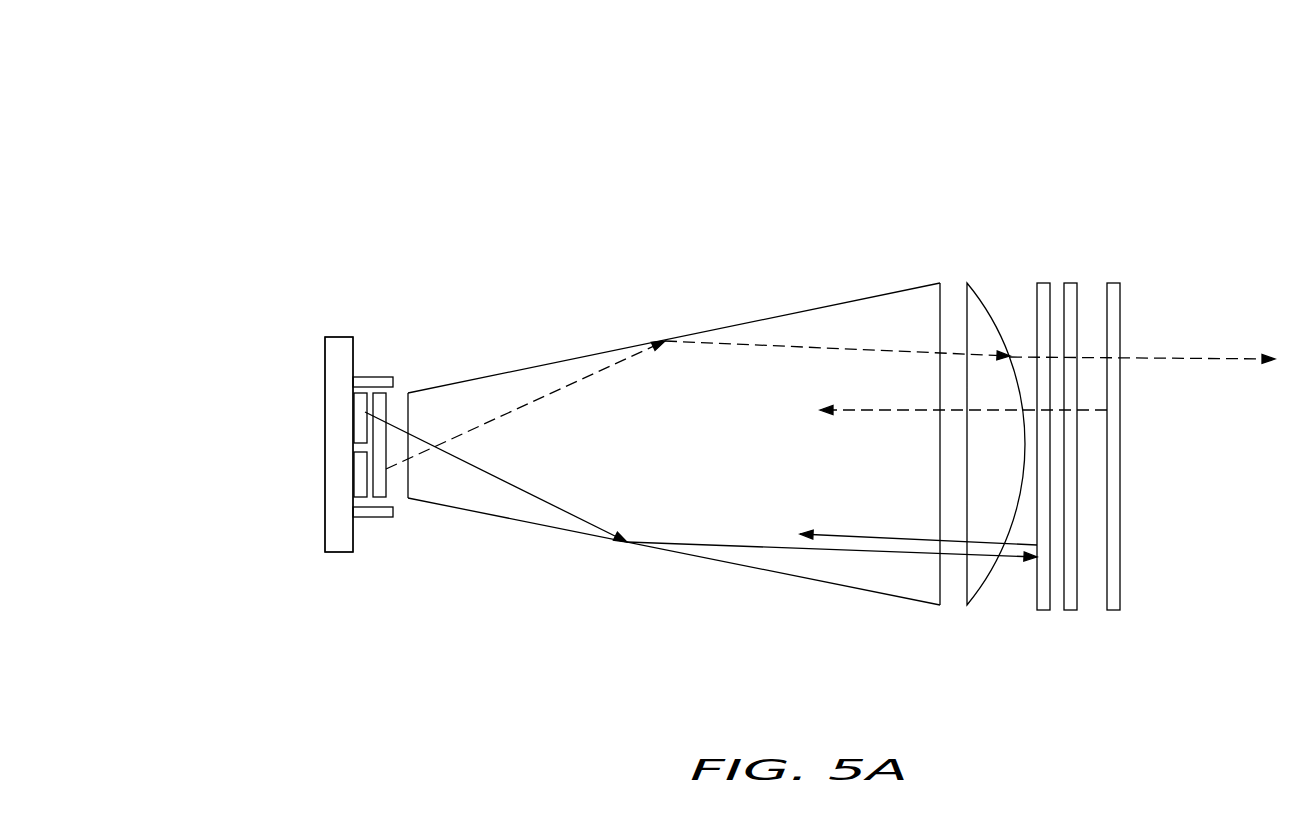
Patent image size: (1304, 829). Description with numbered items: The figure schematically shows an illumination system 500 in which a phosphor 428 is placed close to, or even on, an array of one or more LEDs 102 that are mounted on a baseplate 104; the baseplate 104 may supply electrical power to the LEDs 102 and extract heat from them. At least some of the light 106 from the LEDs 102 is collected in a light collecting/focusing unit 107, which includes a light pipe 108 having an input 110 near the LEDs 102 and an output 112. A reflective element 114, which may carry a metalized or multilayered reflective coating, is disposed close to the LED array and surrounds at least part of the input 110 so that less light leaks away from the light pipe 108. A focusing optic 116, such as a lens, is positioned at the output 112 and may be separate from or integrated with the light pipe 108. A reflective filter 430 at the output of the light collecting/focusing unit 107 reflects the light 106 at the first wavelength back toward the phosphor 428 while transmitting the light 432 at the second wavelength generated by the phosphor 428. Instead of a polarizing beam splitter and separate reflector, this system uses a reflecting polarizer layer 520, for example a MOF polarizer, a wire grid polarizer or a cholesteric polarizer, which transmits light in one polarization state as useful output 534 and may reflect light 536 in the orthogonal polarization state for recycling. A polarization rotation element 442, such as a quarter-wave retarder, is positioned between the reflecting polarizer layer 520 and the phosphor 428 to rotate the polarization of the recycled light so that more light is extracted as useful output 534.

The illumination system 500 is at (342, 122).
The LEDs 102 is at (357, 418).
The baseplate 104 is at (326, 485).
The light 106 is at (525, 492).
The light collecting/focusing unit 107 is at (704, 585).
The light pipe 108 is at (596, 355).
The input 110 is at (407, 393).
The output 112 is at (941, 320).
The reflective element 114 is at (365, 377).
The focusing optic 116 is at (988, 310).
The phosphor 428 is at (395, 495).
The reflective filter 430 is at (1036, 592).
The light at the second wavelength 432 is at (770, 349).
The polarization rotation element 442 is at (1078, 602).
The reflecting polarizer layer 520 is at (1121, 580).
The useful output 534 is at (1243, 362).
The light 536 is at (890, 412).